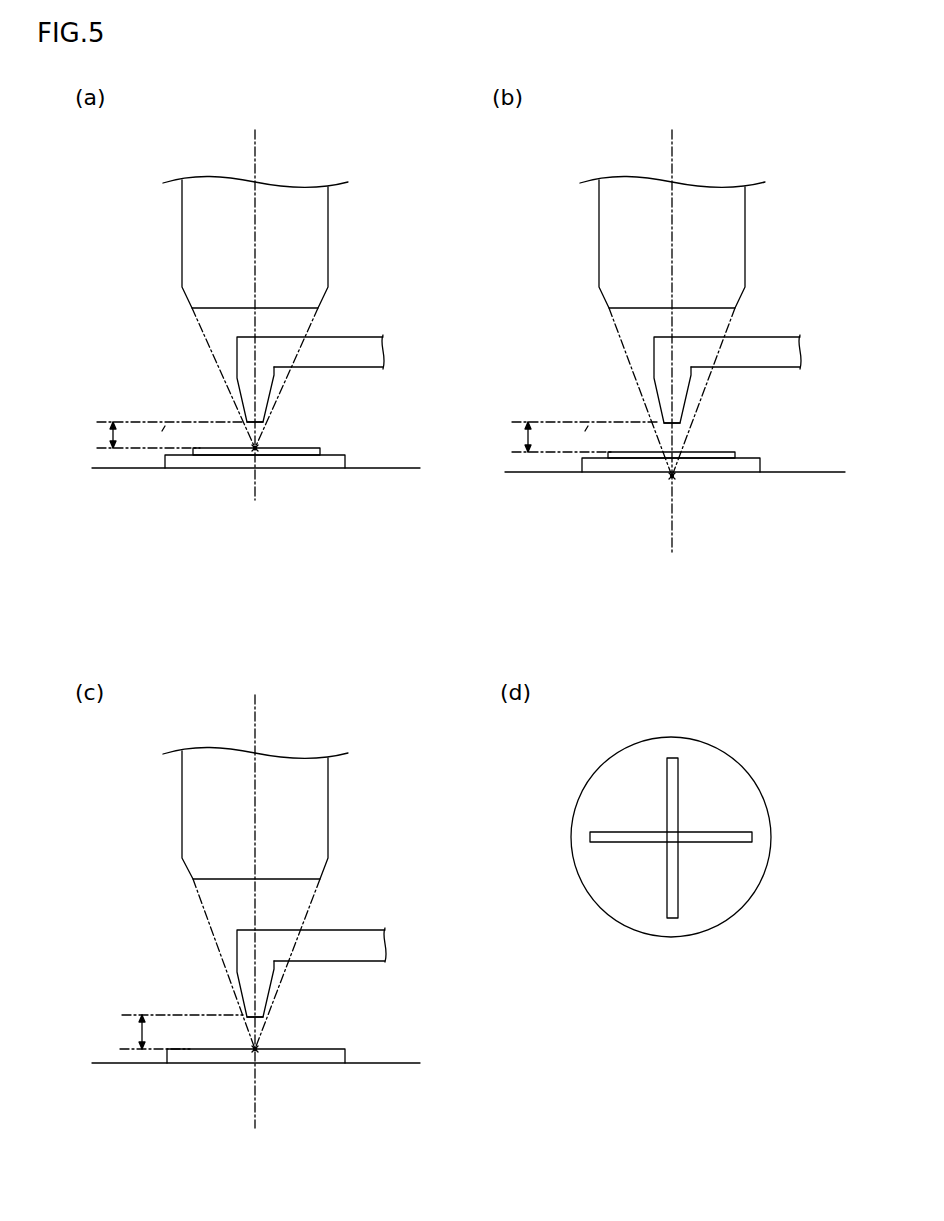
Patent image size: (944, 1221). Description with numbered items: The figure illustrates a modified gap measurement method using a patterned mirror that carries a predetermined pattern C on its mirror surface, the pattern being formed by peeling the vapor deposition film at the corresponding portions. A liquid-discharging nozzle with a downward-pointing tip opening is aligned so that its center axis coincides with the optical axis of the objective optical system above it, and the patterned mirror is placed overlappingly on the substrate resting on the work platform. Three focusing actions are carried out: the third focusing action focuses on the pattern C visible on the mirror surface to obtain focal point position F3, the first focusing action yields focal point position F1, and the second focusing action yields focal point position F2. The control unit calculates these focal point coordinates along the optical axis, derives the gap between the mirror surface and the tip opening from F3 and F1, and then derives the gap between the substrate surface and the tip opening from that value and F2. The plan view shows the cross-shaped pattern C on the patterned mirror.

The pattern C is at (727, 843).
The focal point position F1 is at (674, 478).
The focal point position F2 is at (258, 1047).
The focal point position F3 is at (258, 446).